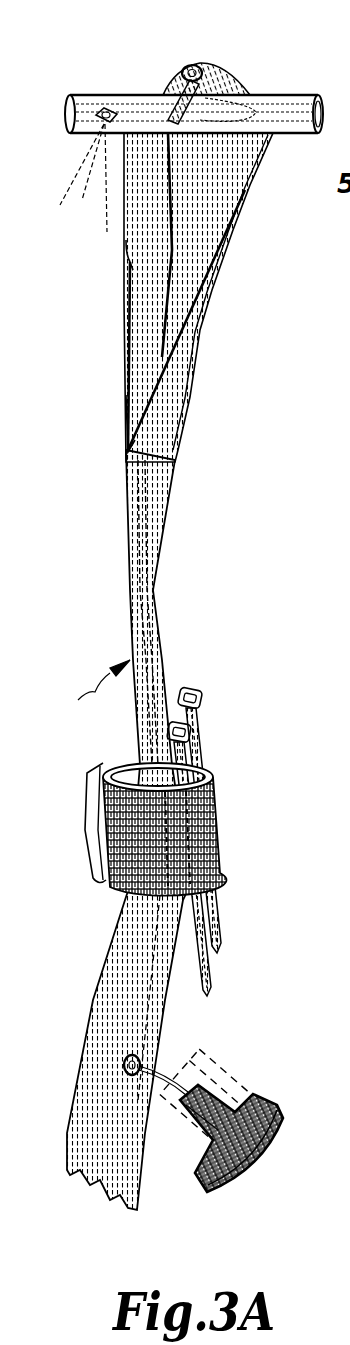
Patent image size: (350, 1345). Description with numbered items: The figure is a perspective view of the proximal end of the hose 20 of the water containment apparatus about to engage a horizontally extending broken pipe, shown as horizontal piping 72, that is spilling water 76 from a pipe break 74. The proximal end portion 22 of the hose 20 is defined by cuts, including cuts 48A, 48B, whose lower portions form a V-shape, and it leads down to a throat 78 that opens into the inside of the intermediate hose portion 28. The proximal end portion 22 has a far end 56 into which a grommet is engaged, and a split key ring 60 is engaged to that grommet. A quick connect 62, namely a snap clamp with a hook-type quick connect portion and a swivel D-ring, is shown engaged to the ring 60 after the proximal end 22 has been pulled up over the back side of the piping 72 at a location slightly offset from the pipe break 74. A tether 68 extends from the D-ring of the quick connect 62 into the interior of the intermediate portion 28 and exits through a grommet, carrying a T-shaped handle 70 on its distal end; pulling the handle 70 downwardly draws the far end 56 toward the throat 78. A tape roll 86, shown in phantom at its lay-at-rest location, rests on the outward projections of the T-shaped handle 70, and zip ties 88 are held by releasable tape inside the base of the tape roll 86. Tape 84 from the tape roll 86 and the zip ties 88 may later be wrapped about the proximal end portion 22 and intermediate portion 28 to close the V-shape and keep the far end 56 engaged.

The hose 20 is at (86, 690).
The proximal end portion 22 is at (112, 328).
The intermediate hose portion 28 is at (128, 590).
The cut 48A is at (187, 300).
The cut 48B is at (128, 362).
The far end 56 is at (238, 83).
The split key ring 60 is at (196, 67).
The quick connect 62 is at (248, 118).
The tether 68 is at (126, 262).
The T-shaped handle 70 is at (252, 1148).
The horizontal piping 72 is at (303, 95).
The pipe break 74 is at (105, 108).
The water 76 is at (64, 192).
The throat 78 is at (125, 398).
The tape 84 is at (87, 818).
The tape roll 86 is at (222, 838).
The zip ties 88 is at (222, 945).